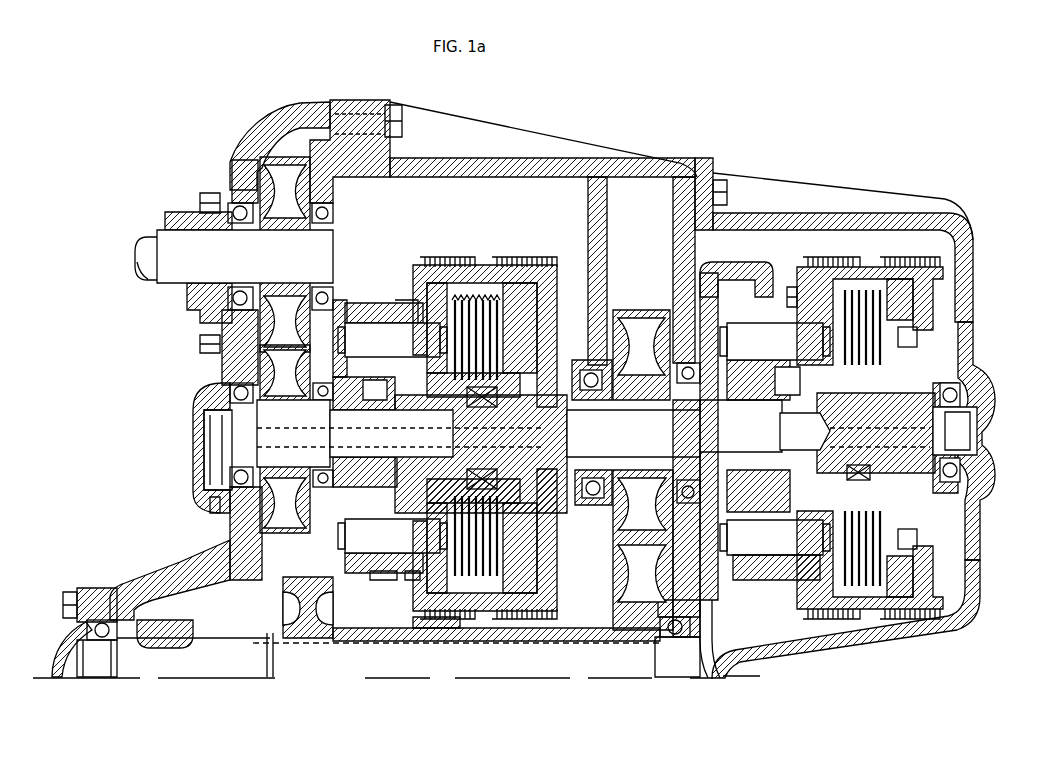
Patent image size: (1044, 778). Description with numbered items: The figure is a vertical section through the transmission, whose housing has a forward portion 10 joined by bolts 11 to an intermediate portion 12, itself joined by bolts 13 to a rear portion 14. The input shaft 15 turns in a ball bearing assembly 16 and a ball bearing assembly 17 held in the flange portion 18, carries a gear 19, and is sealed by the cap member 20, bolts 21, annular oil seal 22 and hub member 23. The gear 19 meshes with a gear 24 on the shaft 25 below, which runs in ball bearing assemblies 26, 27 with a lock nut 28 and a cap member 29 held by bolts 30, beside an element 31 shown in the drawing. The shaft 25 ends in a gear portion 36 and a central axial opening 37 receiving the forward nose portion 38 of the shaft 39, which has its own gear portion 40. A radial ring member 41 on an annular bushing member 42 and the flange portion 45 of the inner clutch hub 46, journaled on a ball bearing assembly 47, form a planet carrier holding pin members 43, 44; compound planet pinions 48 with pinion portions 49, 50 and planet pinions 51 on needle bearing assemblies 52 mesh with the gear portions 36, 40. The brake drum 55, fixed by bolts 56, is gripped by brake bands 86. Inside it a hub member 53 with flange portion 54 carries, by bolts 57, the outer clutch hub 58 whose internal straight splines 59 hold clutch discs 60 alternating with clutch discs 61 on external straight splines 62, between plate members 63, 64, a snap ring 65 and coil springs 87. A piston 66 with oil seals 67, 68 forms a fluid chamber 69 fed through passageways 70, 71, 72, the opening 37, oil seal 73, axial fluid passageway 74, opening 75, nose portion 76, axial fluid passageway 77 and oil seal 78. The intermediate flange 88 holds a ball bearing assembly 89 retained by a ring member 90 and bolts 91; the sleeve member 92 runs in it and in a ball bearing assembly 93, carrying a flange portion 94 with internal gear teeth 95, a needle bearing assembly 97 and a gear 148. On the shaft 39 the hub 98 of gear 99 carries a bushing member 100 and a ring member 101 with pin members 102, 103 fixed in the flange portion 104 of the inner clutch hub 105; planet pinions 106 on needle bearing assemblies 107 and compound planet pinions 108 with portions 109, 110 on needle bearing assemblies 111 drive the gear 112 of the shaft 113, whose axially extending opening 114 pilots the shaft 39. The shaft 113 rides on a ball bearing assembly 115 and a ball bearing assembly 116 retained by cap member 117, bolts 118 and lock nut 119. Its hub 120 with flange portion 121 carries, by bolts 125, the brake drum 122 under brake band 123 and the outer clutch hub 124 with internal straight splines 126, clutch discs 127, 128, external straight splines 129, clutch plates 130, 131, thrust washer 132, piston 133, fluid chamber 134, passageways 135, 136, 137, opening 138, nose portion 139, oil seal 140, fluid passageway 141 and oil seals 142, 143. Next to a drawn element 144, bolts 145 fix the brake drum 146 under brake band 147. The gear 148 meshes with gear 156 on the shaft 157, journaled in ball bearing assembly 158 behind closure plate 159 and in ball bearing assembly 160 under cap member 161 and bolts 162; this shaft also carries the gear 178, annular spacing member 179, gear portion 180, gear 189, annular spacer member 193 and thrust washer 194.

The forward portion 10 is at (300, 116).
The bolts 11 is at (398, 107).
The intermediate portion 12 is at (478, 124).
The bolts 13 is at (722, 180).
The rear portion 14 is at (826, 195).
The input shaft 15 is at (172, 236).
The ball bearing assembly 16 is at (242, 289).
The ball bearing assembly 17 is at (330, 213).
The flange portion 18 is at (340, 300).
The gear 19 is at (283, 298).
The cap member 20 is at (225, 195).
The bolts 21 is at (200, 345).
The annular oil seal 22 is at (200, 316).
The hub member 23 is at (202, 298).
The gear 24 is at (290, 535).
The shaft 25 is at (246, 454).
The ball bearing assembly 26 is at (228, 385).
The ball bearing assembly 27 is at (323, 381).
The lock nut 28 is at (228, 472).
The cap member 29 is at (230, 393).
The bolts 30 is at (208, 505).
The sleeve 31 is at (372, 550).
The gear portion 36 is at (420, 470).
The central axial opening 37 is at (332, 428).
The forward nose portion 38 is at (370, 404).
The shaft 39 is at (644, 434).
The gear portion 40 is at (455, 468).
The radial ring member 41 is at (355, 305).
The annular bushing member 42 is at (362, 396).
The pin members 43 is at (401, 342).
The pin members 44 is at (345, 548).
The flange portion 45 is at (420, 262).
The inner clutch hub 46 is at (446, 399).
The ball bearing assembly 47 is at (481, 407).
The compound planet pinions 48 is at (388, 576).
The pinion portion 49 is at (376, 574).
The pinion portion 50 is at (402, 580).
The planet pinions 51 is at (402, 300).
The needle bearing assemblies 52 is at (392, 318).
The hub member 53 is at (522, 400).
The flange portion 54 is at (553, 320).
The brake drum 55 is at (508, 262).
The bolts 56 is at (412, 580).
The bolts 57 is at (556, 580).
The outer clutch hub 58 is at (560, 600).
The internal straight splines 59 is at (502, 601).
The clutch discs 60 is at (482, 576).
The clutch discs 61 is at (470, 490).
The external straight splines 62 is at (496, 482).
The plate member 63 is at (438, 530).
The plate member 64 is at (522, 505).
The snap ring 65 is at (470, 586).
The piston 66 is at (550, 540).
The oil seal 67 is at (519, 447).
The oil seal 68 is at (556, 566).
The fluid chamber 69 is at (548, 500).
The radial fluid passageway 70 is at (560, 465).
The radial fluid passageway 71 is at (558, 440).
The fluid passageway 72 is at (487, 447).
The oil seal 73 is at (396, 424).
The axial fluid passageway 74 is at (283, 436).
The opening 75 is at (245, 432).
The nose portion 76 is at (200, 450).
The axial fluid passageway 77 is at (200, 432).
The oil seal 78 is at (205, 420).
The brake bands 86 is at (522, 601).
The coil springs 87 is at (476, 298).
The flange 88 is at (600, 245).
The ball bearing assembly 89 is at (582, 368).
The ring member 90 is at (612, 535).
The bolts 91 is at (570, 520).
The sleeve member 92 is at (653, 405).
The ball bearing assembly 93 is at (683, 400).
The flange portion 94 is at (706, 280).
The internal gear teeth 95 is at (738, 275).
The needle bearing assembly 97 is at (594, 411).
The hub 98 is at (734, 427).
The gear 99 is at (760, 486).
The bushing member 100 is at (738, 458).
The ring member 101 is at (762, 375).
The pin members 102 is at (820, 341).
The pin members 103 is at (761, 538).
The flange portion 104 is at (787, 298).
The inner clutch hub 105 is at (792, 395).
The planet pinions 106 is at (745, 332).
The needle bearing assemblies 107 is at (770, 352).
The compound planet pinions 108 is at (770, 582).
The planet pinion portion 109 is at (746, 582).
The planet pinion portion 110 is at (796, 582).
The needle bearing assemblies 111 is at (783, 548).
The gear 112 is at (791, 370).
The shaft 113 is at (876, 433).
The axially extending opening 114 is at (818, 431).
The ball bearing assembly 115 is at (850, 464).
The ball bearing assembly 116 is at (975, 380).
The cap member 117 is at (988, 394).
The bolts 118 is at (980, 355).
The lock nut 119 is at (975, 472).
The hub 120 is at (878, 440).
The flange portion 121 is at (962, 320).
The brake drum 122 is at (916, 262).
The brake band 123 is at (885, 265).
The outer clutch hub 124 is at (908, 602).
The bolts 125 is at (975, 600).
The internal straight splines 126 is at (880, 580).
The clutch discs 127 is at (862, 580).
The clutch discs 128 is at (842, 490).
The external straight splines 129 is at (952, 492).
The clutch plate 130 is at (842, 582).
The clutch plate 131 is at (960, 526).
The thrust washer 132 is at (810, 606).
The piston 133 is at (935, 540).
The fluid chamber 134 is at (912, 337).
The radial fluid passageway 135 is at (874, 443).
The radial fluid passageway 136 is at (905, 448).
The fluid passageway 137 is at (912, 440).
The opening 138 is at (978, 458).
The nose portion 139 is at (978, 412).
The oil seal 140 is at (978, 443).
The fluid passageway 141 is at (978, 425).
The oil seal 142 is at (955, 478).
The oil seal 143 is at (950, 574).
The clutch drum 144 is at (850, 290).
The bolts 145 is at (790, 288).
The brake drum 146 is at (814, 265).
The brake band 147 is at (840, 260).
The gear 148 is at (637, 310).
The gear 156 is at (612, 560).
The shaft 157 is at (575, 668).
The ball bearing assembly 158 is at (713, 636).
The closure plate 159 is at (712, 628).
The ball bearing assembly 160 is at (116, 616).
The cap member 161 is at (62, 640).
The bolts 162 is at (70, 591).
The gear 178 is at (432, 630).
The annular spacing member 179 is at (480, 641).
The gear portion 180 is at (170, 620).
The gear 189 is at (290, 580).
The annular spacer member 193 is at (345, 640).
The thrust washer 194 is at (265, 635).